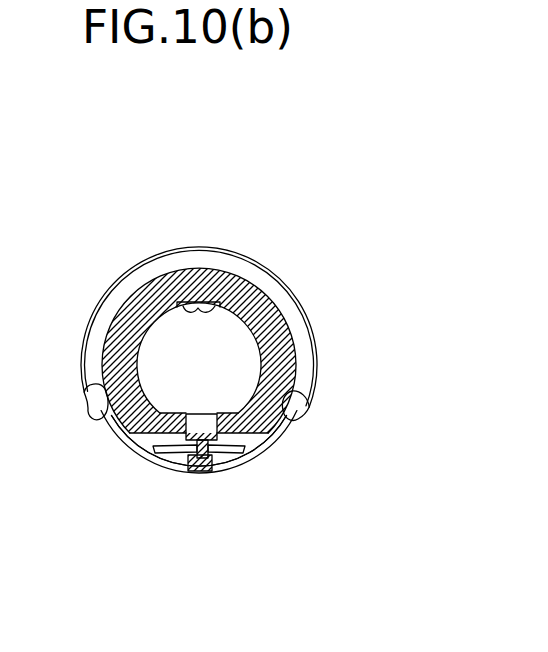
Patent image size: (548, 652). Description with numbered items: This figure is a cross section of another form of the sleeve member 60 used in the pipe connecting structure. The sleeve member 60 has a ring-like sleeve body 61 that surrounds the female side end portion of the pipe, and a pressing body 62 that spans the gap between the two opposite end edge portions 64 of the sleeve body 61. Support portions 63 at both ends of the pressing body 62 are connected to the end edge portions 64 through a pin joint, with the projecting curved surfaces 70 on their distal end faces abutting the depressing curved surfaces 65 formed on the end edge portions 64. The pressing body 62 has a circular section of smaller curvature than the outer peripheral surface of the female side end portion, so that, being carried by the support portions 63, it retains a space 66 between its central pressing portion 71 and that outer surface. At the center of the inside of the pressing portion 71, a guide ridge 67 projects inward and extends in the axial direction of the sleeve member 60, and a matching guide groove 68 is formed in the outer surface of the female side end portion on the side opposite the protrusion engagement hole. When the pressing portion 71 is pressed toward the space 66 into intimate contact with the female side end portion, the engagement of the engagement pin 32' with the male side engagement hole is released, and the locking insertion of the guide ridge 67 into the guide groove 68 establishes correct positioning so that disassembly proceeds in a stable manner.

The sleeve member 60 is at (284, 246).
The sleeve body 61 is at (200, 258).
The engagement pin 32' is at (192, 334).
The guide groove 68 is at (193, 427).
The pressing body 62 is at (247, 457).
The support portion 63 is at (113, 432).
The end edge portion 64 is at (92, 397).
The depressing curved surface 65 is at (98, 395).
The projecting curved surface 70 is at (100, 425).
The space 66 is at (155, 452).
The guide ridge 67 is at (212, 463).
The pressing portion 71 is at (167, 463).